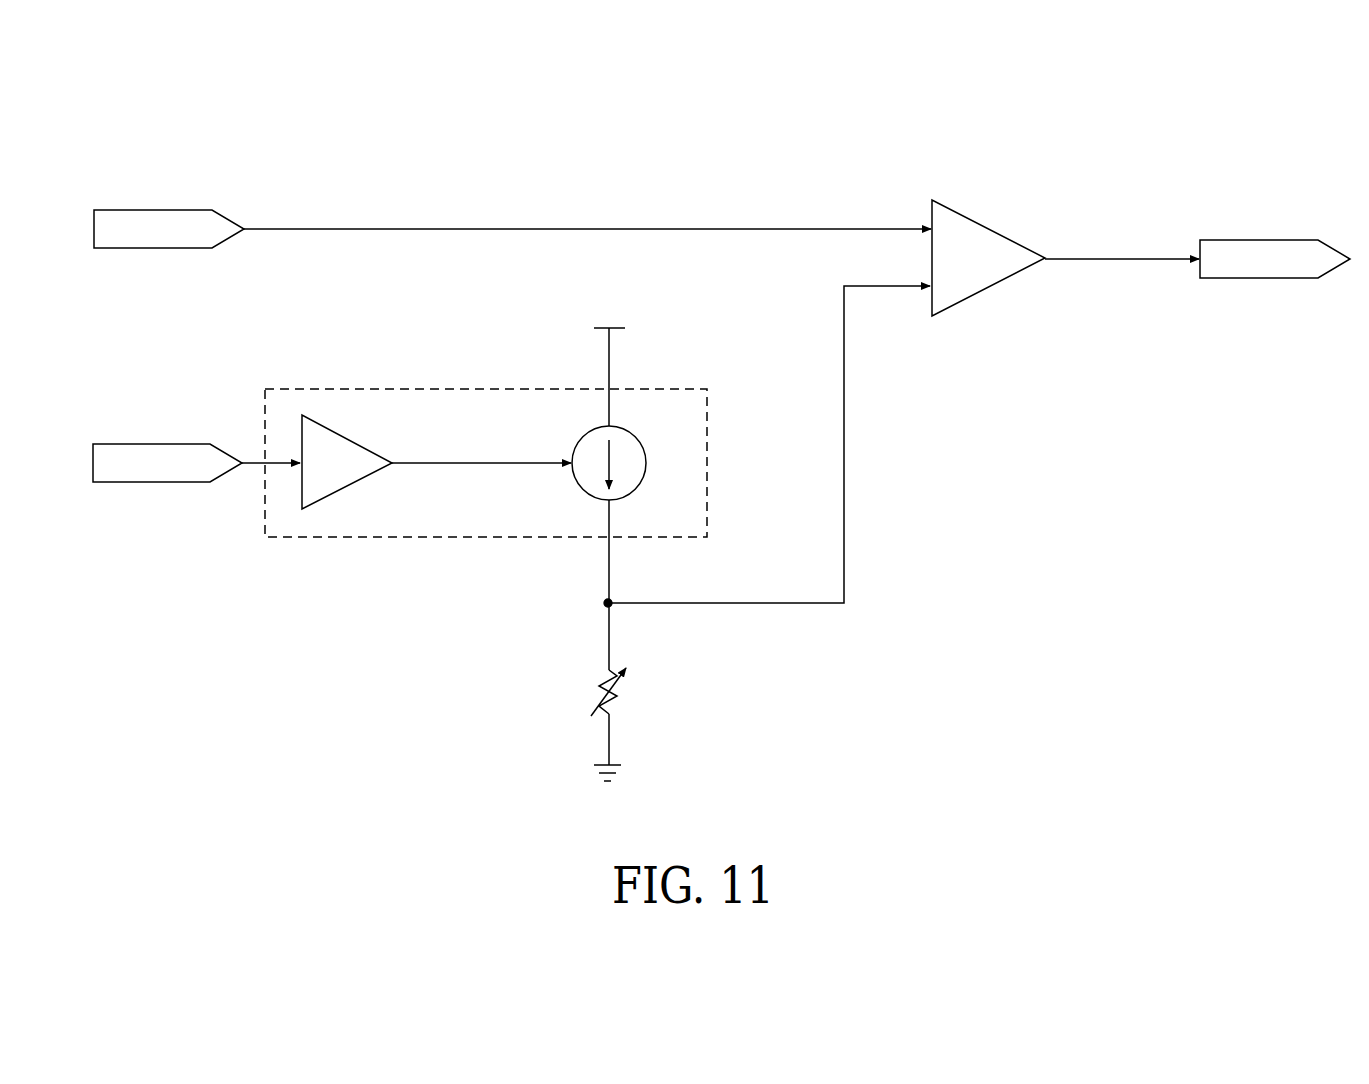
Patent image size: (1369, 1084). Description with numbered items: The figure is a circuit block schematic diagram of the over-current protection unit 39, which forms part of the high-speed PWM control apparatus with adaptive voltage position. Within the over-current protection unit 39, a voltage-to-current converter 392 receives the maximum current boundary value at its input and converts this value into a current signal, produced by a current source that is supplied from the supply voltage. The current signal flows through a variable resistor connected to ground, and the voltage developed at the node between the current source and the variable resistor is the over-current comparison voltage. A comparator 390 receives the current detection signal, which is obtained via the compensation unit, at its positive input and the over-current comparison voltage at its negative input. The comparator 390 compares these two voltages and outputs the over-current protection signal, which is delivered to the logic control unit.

The over-current protection unit 39 is at (1189, 144).
The comparator 390 is at (1005, 238).
The voltage-to-current converter 392 is at (460, 389).